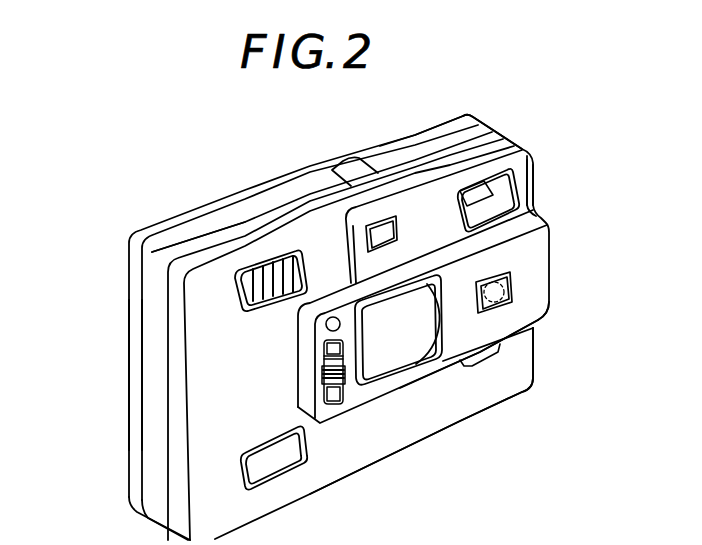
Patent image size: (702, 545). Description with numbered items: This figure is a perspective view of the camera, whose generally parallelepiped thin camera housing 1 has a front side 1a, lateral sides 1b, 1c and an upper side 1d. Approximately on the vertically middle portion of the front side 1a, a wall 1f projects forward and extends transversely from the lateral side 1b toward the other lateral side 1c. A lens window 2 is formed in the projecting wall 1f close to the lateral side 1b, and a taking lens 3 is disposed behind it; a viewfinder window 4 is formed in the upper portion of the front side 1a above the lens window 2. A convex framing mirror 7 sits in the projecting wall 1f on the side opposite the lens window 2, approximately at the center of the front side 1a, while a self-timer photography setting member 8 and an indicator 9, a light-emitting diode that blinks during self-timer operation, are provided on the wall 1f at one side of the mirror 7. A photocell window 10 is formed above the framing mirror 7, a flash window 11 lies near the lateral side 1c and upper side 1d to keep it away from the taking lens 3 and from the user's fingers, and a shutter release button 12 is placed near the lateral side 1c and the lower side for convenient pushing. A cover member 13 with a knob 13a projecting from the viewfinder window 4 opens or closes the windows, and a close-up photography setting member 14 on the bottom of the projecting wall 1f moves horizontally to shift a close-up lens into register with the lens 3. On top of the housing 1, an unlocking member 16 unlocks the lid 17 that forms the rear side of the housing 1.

The camera housing 1 is at (265, 181).
The front side 1a is at (395, 445).
The lateral side 1b is at (535, 363).
The lateral side 1c is at (153, 375).
The upper side 1d is at (202, 228).
The projecting wall 1f is at (532, 323).
The lens window 2 is at (527, 315).
The taking lens 3 is at (512, 289).
The viewfinder window 4 is at (518, 204).
The framing mirror 7 is at (400, 357).
The self-timer photography setting member 8 is at (328, 383).
The indicator 9 is at (325, 328).
The photocell window 10 is at (367, 237).
The flash window 11 is at (248, 293).
The shutter release button 12 is at (288, 458).
The cover member 13 is at (515, 184).
The knob 13a is at (494, 192).
The close-up photography setting member 14 is at (487, 355).
The unlocking member 16 is at (481, 130).
The lid 17 is at (407, 137).